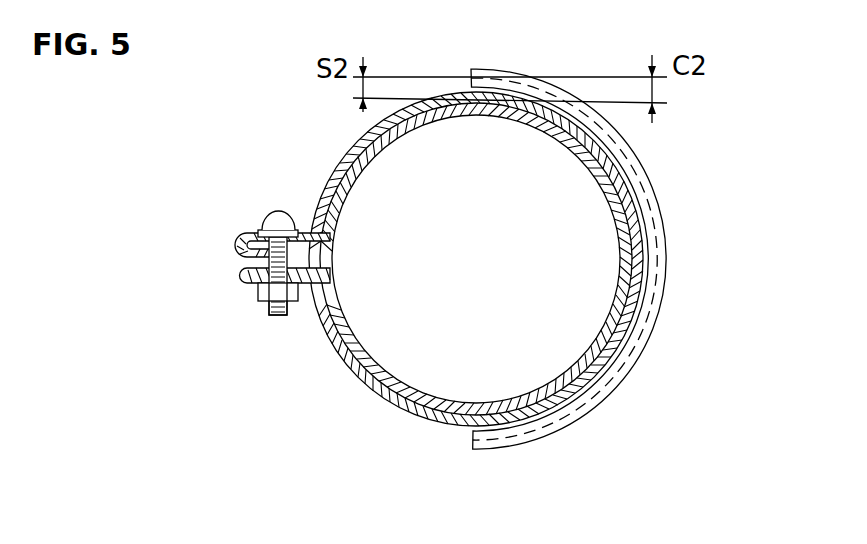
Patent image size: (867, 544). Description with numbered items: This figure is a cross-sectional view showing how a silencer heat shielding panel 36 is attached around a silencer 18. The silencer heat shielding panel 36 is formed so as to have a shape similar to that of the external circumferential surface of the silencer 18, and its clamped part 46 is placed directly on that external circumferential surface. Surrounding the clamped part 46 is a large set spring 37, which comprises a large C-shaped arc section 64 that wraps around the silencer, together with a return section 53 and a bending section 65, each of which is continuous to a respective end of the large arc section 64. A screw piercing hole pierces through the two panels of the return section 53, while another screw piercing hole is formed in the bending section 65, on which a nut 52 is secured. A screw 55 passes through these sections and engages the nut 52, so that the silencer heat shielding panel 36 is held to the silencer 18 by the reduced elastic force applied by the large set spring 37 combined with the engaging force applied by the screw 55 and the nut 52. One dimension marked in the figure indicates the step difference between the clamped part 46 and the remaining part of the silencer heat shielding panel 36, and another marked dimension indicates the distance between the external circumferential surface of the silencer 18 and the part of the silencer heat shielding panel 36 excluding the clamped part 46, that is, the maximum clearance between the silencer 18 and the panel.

The silencer 18 is at (405, 384).
The silencer heat shielding panel 36 is at (672, 311).
The large set spring 37 is at (333, 156).
The clamped part 46 is at (610, 352).
The nut 52 is at (270, 306).
The return section 53 is at (236, 246).
The screw 55 is at (262, 218).
The large C-shaped arc section 64 is at (428, 416).
The bending section 65 is at (257, 283).